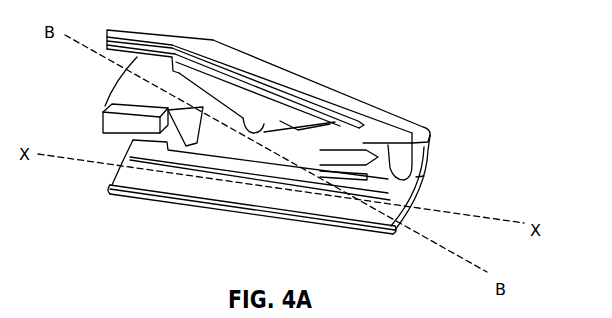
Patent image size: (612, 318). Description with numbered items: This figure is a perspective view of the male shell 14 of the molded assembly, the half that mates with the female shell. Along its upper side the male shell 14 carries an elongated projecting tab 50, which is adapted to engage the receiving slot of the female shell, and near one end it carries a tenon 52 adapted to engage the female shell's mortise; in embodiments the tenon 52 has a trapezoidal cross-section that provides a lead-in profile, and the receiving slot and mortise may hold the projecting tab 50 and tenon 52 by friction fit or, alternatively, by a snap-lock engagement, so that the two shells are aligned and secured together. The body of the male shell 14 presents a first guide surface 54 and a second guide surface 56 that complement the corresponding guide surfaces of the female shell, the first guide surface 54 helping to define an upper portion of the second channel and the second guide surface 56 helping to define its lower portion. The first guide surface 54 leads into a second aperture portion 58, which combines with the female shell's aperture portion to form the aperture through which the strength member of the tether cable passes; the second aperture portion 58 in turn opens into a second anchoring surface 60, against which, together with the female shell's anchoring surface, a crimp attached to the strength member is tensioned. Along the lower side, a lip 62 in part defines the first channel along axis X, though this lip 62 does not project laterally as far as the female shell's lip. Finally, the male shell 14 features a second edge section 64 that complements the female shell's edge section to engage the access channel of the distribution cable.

The male shell 14 is at (267, 130).
The projecting tab 50 is at (212, 40).
The tenon 52 is at (103, 117).
The first guide surface 54 is at (270, 130).
The second guide surface 56 is at (208, 132).
The second aperture portion 58 is at (416, 177).
The second anchoring surface 60 is at (398, 155).
The lip 62 is at (352, 221).
The second edge section 64 is at (133, 141).